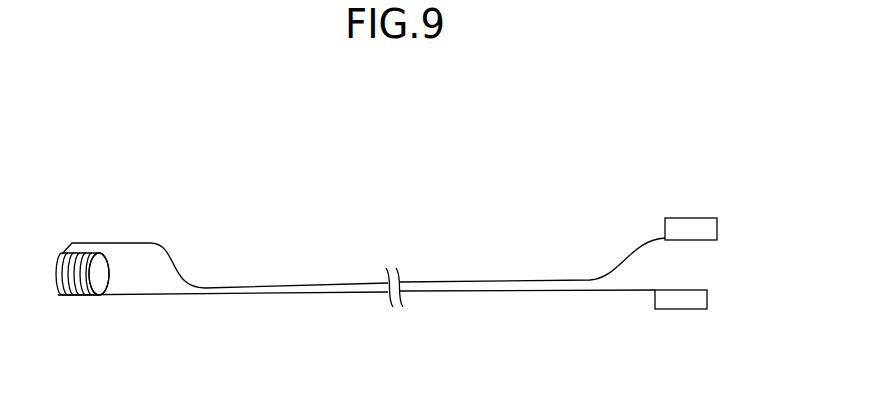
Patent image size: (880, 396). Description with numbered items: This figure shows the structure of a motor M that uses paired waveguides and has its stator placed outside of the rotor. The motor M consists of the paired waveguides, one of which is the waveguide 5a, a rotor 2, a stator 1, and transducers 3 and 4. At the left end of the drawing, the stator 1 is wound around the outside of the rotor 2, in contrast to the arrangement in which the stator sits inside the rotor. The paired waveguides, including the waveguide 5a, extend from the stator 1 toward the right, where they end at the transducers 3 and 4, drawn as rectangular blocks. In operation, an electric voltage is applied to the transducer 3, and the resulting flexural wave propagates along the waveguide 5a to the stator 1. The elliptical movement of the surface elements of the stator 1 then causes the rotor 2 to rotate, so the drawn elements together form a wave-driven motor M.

The motor M is at (517, 185).
The stator 1 is at (84, 300).
The rotor 2 is at (97, 277).
The transducer 3 is at (717, 224).
The transducer 4 is at (707, 295).
The waveguide 5a is at (263, 284).